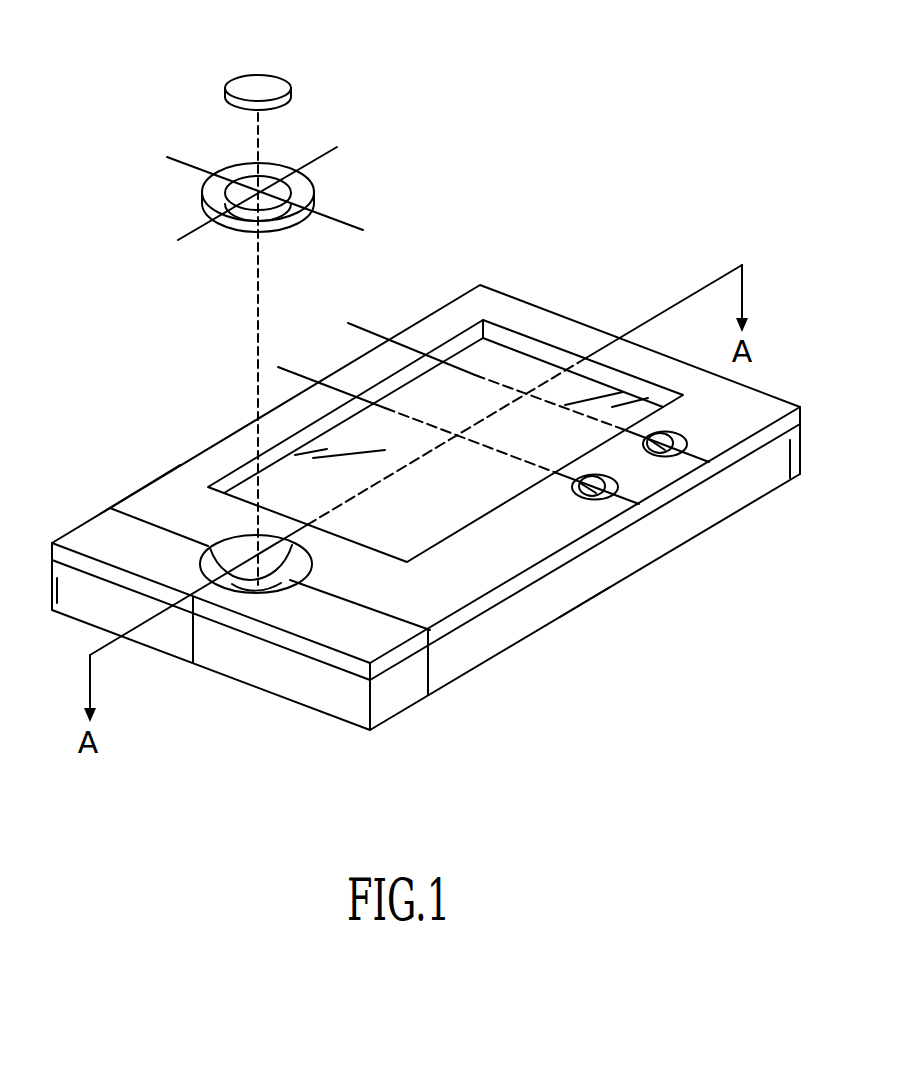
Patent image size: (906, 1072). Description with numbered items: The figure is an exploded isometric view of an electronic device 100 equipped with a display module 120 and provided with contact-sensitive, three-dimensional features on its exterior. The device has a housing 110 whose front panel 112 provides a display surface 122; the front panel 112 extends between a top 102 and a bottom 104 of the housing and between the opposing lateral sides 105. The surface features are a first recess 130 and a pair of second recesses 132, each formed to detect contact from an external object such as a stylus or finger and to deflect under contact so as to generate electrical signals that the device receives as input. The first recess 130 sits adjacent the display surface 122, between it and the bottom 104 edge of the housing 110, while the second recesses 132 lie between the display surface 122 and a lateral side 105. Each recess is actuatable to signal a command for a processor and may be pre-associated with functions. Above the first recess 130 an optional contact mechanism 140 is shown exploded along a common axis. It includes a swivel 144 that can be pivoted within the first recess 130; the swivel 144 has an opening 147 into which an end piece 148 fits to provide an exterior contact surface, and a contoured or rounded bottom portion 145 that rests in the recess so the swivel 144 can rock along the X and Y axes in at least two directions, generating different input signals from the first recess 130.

The electronic device 100 is at (648, 737).
The top 102 is at (547, 304).
The bottom 104 is at (280, 647).
The lateral sides 105 is at (163, 473).
The housing 110 is at (507, 296).
The front panel 112 is at (300, 628).
The display module 120 is at (464, 345).
The display surface 122 is at (388, 529).
The first recess 130 is at (232, 537).
The second recesses 132 is at (648, 438).
The contact mechanism 140 is at (162, 188).
The swivel 144 is at (318, 190).
The bottom portion 145 is at (235, 230).
The opening 147 is at (248, 176).
The end piece 148 is at (260, 75).